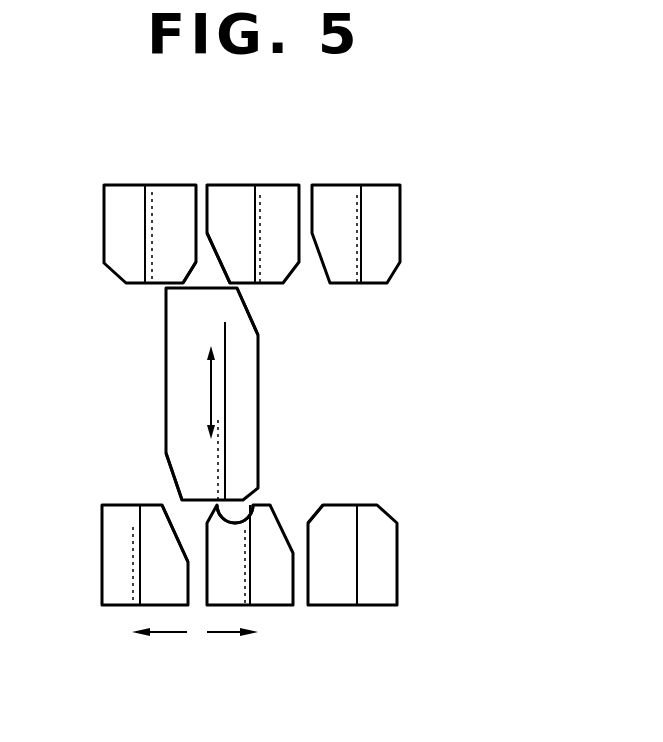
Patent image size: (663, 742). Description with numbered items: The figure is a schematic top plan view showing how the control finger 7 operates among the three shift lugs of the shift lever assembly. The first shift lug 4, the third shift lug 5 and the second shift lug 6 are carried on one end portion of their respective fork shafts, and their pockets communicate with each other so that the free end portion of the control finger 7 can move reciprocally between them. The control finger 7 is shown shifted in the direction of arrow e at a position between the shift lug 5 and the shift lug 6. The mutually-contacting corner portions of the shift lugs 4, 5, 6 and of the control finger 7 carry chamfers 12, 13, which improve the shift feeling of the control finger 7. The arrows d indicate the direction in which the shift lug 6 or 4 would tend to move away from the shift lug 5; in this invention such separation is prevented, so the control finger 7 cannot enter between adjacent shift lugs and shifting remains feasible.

The first shift lug 4 is at (357, 203).
The third shift lug 5 is at (257, 203).
The second shift lug 6 is at (160, 197).
The control finger 7 is at (243, 387).
The chamfer 12 is at (184, 277).
The chamfer 13 is at (253, 322).
The shifting direction arrow e is at (210, 402).
The lug separation arrows d is at (170, 632).